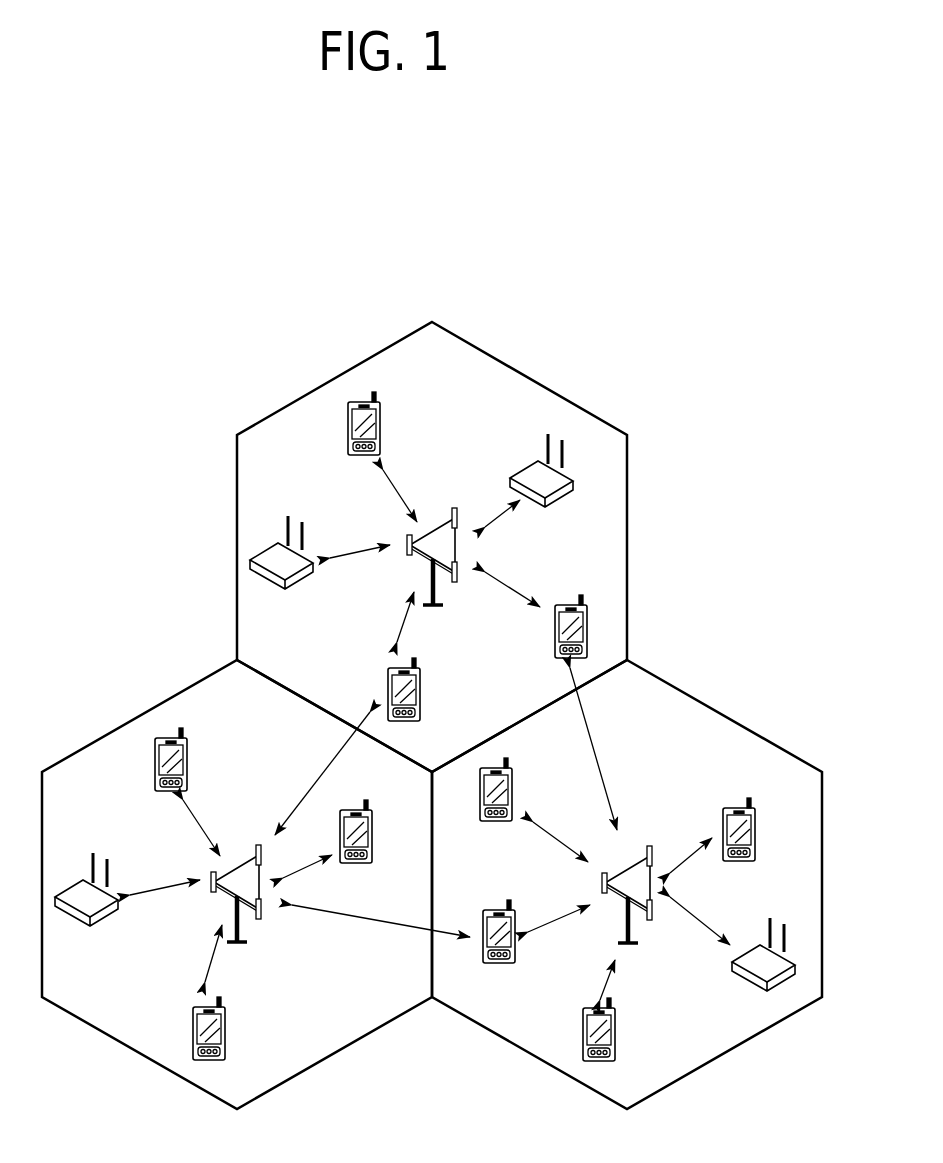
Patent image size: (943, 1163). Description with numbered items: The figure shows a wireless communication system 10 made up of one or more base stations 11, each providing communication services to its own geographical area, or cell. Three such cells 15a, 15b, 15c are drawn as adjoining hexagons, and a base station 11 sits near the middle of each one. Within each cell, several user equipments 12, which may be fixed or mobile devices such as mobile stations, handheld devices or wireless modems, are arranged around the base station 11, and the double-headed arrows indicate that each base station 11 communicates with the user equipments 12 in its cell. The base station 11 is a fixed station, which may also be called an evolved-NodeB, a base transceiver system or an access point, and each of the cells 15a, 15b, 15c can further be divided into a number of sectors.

The wireless communication system 10 is at (432, 715).
The base station 11 is at (437, 529).
The user equipment 12 is at (382, 425).
The cell 15a is at (628, 535).
The cell 15b is at (748, 728).
The cell 15c is at (113, 725).